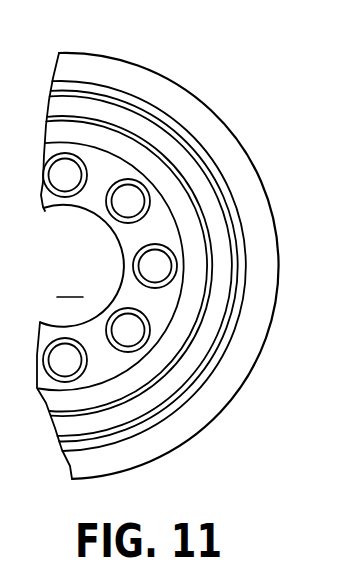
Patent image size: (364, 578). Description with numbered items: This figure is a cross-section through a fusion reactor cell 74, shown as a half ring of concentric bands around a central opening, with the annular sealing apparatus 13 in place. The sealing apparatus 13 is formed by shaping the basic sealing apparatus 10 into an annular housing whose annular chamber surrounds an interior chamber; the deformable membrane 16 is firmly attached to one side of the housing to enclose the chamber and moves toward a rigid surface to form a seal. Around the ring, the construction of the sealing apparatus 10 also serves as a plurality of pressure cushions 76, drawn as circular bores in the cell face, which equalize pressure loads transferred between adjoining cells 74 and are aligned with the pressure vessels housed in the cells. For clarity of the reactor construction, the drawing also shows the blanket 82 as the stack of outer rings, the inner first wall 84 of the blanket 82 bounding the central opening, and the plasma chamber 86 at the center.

The sealing apparatus 10 is at (49, 430).
The sealing apparatus 13 is at (178, 402).
The membrane 16 is at (130, 410).
The cell 74 is at (170, 59).
The pressure cushions 76 is at (110, 267).
The blanket 82 is at (124, 288).
The inner first wall 84 is at (98, 218).
The plasma chamber 86 is at (70, 283).